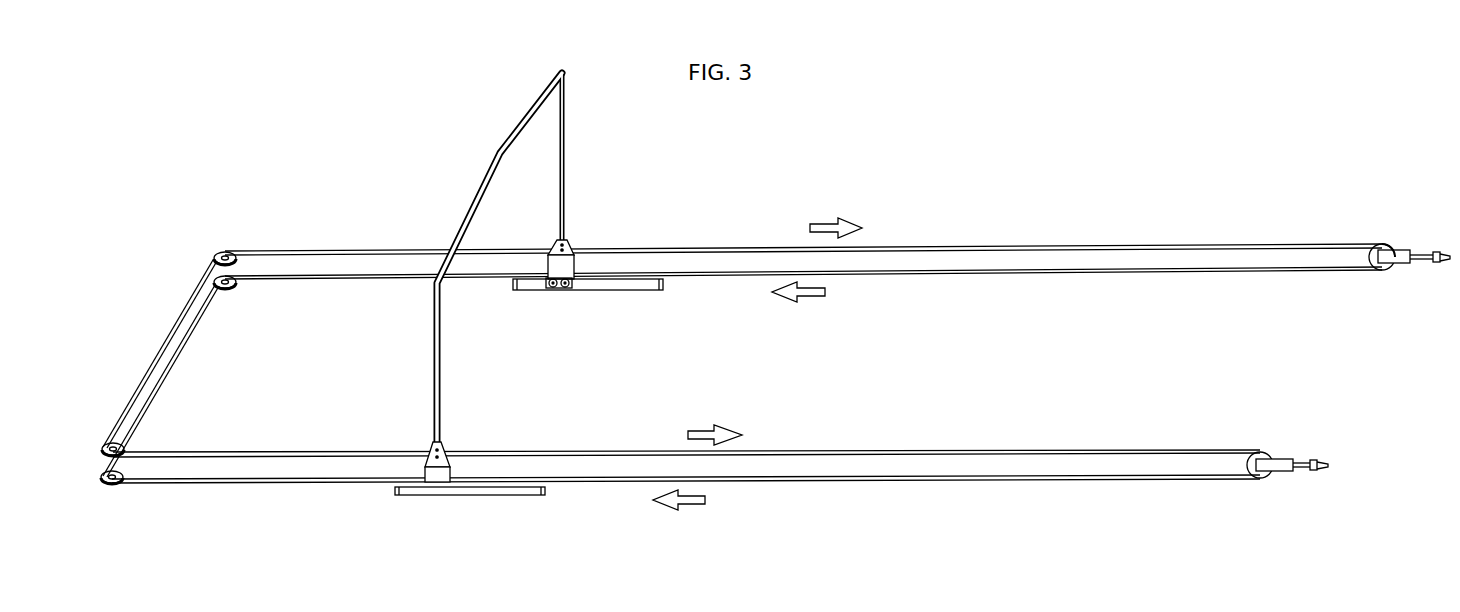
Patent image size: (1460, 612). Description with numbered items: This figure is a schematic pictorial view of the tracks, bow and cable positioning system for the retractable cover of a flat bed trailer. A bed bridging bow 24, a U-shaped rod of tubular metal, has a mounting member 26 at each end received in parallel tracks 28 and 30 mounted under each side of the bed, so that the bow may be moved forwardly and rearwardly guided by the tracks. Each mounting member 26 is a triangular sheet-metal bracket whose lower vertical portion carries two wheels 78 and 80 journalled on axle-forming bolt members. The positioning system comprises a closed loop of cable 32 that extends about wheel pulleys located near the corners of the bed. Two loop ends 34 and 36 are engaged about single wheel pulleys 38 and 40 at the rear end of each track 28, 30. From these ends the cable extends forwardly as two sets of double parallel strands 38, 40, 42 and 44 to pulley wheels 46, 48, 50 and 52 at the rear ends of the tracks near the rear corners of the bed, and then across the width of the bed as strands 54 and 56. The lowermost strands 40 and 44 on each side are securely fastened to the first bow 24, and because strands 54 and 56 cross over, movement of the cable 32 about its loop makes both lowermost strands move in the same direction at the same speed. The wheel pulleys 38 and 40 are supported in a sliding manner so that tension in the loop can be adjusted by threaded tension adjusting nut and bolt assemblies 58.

The bow 24 is at (484, 163).
The mounting member 26 is at (563, 268).
The track 28 is at (510, 488).
The track 30 is at (638, 283).
The cable 32 is at (252, 494).
The loop end 34 is at (1268, 486).
The loop end 36 is at (1382, 278).
The wheel pulley 38 is at (970, 455).
The wheel pulley 40 is at (1387, 241).
The cable strand 42 is at (905, 246).
The cable strand 44 is at (930, 275).
The pulley wheel 46 is at (125, 450).
The pulley wheel 48 is at (121, 483).
The pulley wheel 50 is at (232, 252).
The pulley wheel 52 is at (233, 288).
The cable strand 54 is at (120, 436).
The cable strand 56 is at (141, 411).
The tension adjusting nut and bolt assembly 58 is at (1433, 269).
The wheel 78 is at (552, 288).
The wheel 80 is at (567, 288).